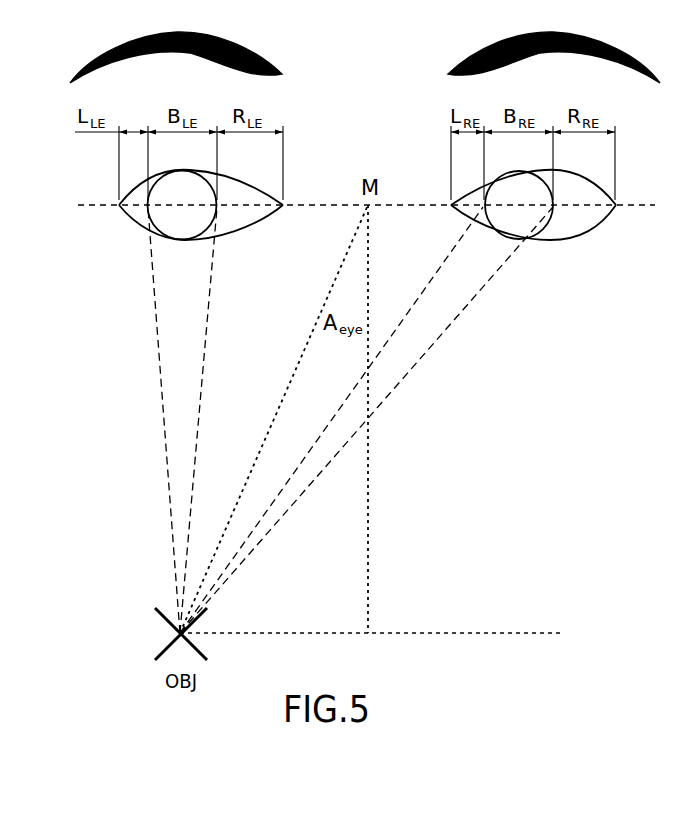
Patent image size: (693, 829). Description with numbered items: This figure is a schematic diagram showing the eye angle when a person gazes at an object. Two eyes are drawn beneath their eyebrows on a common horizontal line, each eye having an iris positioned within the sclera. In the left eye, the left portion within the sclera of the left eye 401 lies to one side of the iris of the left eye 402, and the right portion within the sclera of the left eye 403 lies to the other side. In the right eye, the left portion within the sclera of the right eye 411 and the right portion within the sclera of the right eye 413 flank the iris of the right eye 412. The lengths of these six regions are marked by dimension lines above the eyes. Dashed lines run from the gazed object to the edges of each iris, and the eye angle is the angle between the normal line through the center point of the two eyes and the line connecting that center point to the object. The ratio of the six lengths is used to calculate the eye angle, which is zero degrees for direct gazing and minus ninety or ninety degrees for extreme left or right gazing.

The left portion within the sclera of the left eye 401 is at (137, 218).
The iris of the left eye 402 is at (190, 228).
The right portion within the sclera of the left eye 403 is at (240, 220).
The left portion within the sclera of the right eye 411 is at (465, 212).
The iris of the right eye 412 is at (497, 223).
The right portion within the sclera of the right eye 413 is at (567, 220).